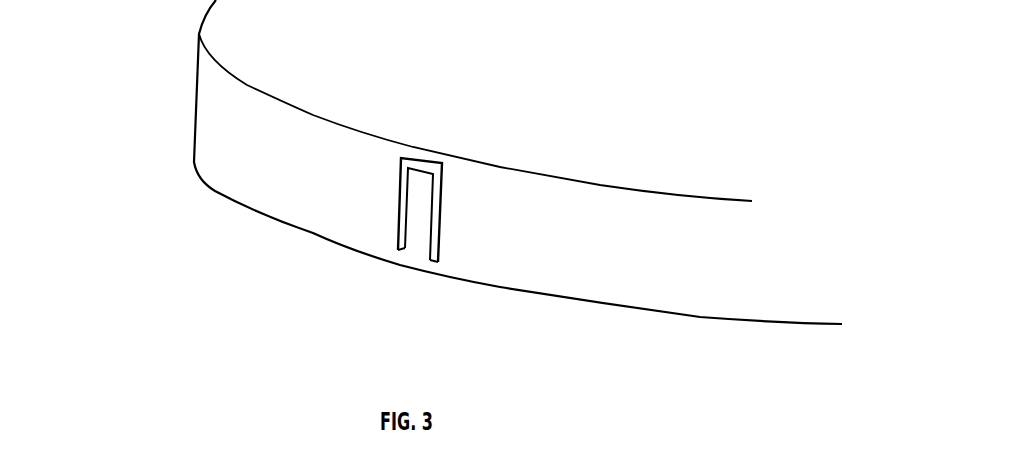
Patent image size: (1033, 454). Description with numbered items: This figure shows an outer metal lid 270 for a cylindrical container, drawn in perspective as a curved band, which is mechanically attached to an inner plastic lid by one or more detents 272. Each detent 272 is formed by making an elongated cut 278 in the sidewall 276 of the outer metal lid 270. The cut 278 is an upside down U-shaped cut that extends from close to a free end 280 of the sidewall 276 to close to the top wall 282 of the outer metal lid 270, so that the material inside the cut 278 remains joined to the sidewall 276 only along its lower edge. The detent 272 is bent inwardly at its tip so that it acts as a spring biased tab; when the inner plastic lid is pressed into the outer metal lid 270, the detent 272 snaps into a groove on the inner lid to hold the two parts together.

The outer metal lid 270 is at (129, 73).
The detent 272 is at (421, 235).
The sidewall 276 is at (638, 294).
The elongated cut 278 is at (398, 221).
The free end 280 is at (408, 268).
The top wall 282 is at (408, 96).